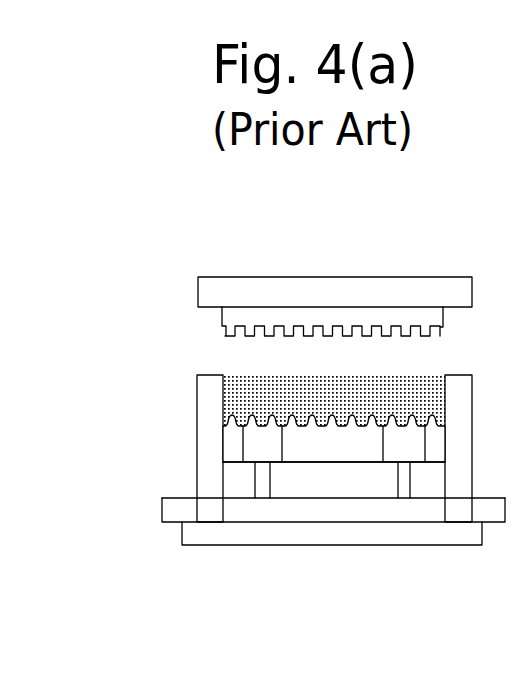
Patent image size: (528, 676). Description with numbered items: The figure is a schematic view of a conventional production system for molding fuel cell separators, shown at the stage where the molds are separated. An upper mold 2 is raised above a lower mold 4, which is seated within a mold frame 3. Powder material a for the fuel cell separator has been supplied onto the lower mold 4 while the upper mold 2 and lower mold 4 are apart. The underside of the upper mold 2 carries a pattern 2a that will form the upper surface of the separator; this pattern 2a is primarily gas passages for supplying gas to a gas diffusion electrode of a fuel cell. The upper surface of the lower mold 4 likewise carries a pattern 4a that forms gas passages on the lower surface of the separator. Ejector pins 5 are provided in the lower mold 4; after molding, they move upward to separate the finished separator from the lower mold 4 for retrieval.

The upper mold 2 is at (325, 292).
The pattern 2a is at (266, 332).
The mold frame 3 is at (462, 437).
The lower mold 4 is at (338, 471).
The pattern 4a is at (398, 412).
The ejector pins 5 is at (253, 438).
The powder material a is at (320, 397).